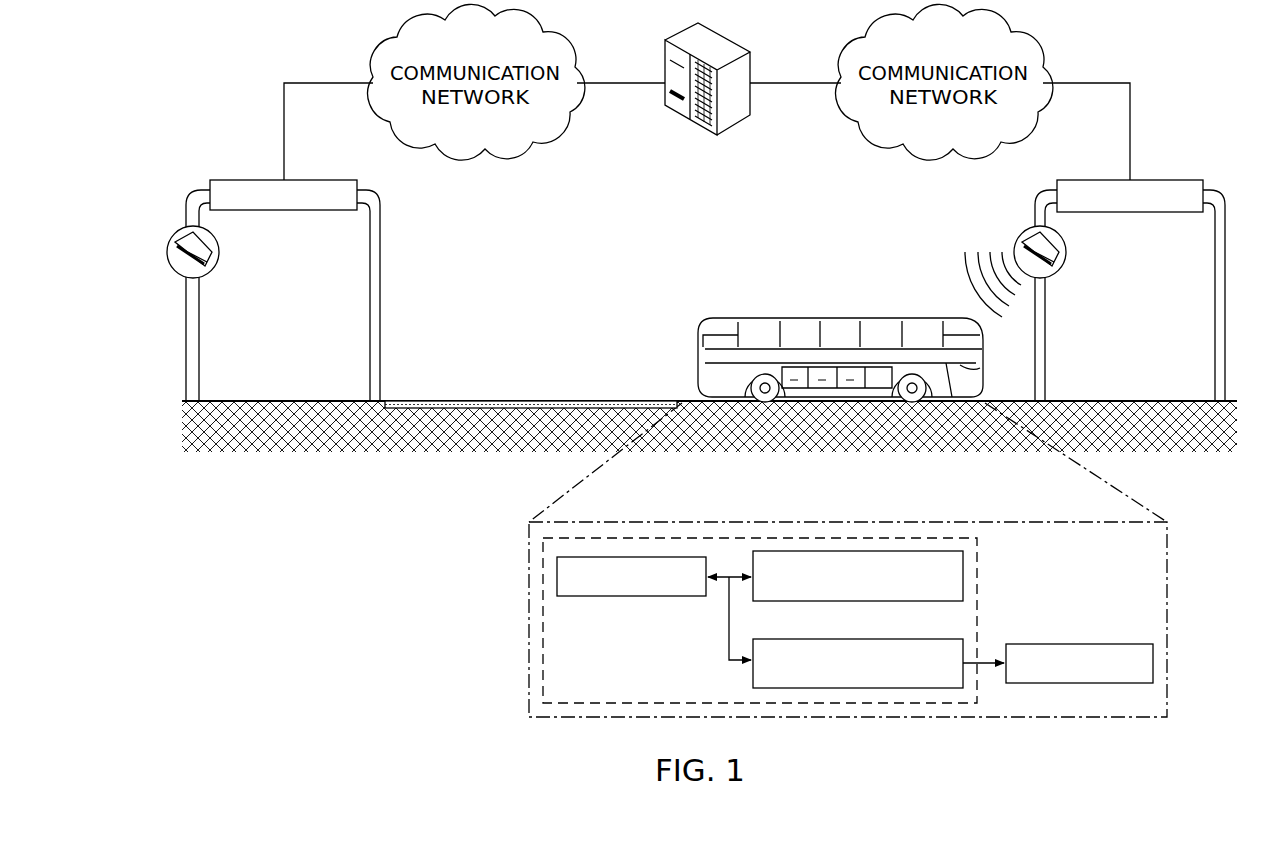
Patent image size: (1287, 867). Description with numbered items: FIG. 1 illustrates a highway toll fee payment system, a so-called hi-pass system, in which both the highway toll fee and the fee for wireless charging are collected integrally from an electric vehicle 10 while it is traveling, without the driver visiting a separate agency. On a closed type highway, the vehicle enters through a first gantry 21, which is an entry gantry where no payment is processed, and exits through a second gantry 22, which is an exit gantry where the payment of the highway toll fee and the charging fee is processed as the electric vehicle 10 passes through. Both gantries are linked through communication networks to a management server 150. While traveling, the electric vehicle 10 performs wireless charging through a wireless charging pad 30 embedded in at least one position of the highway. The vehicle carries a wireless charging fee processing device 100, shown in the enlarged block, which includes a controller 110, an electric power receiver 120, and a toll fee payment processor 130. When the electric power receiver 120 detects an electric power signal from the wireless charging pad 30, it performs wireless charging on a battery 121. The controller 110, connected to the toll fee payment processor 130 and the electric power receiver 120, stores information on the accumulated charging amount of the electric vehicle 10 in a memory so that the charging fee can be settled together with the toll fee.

The electric vehicle 10 is at (813, 318).
The first gantry 21 is at (380, 226).
The second gantry 22 is at (1045, 358).
The wireless charging pad 30 is at (505, 400).
The wireless charging fee processing device 100 is at (735, 538).
The controller 110 is at (628, 557).
The electric power receiver 120 is at (753, 672).
The battery 121 is at (1077, 644).
The toll fee payment processor 130 is at (858, 551).
The management server 150 is at (736, 125).